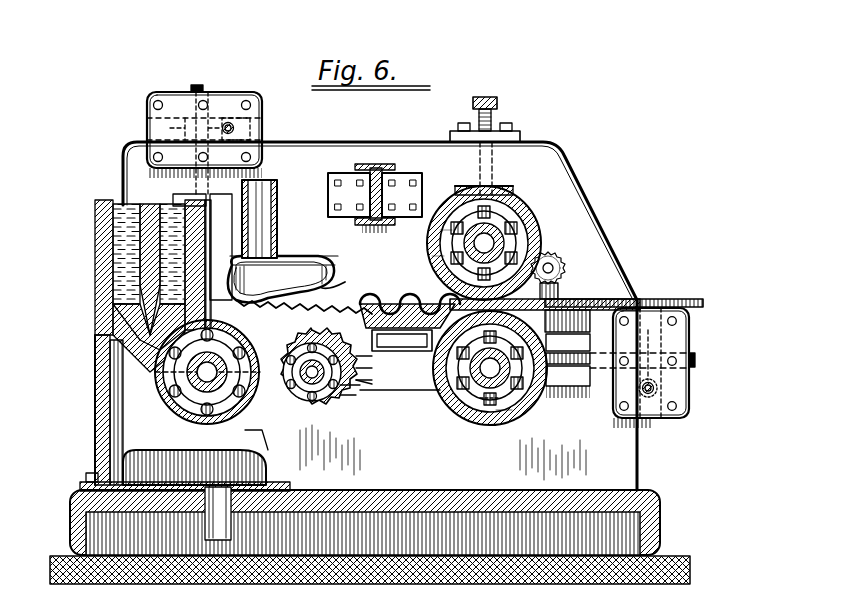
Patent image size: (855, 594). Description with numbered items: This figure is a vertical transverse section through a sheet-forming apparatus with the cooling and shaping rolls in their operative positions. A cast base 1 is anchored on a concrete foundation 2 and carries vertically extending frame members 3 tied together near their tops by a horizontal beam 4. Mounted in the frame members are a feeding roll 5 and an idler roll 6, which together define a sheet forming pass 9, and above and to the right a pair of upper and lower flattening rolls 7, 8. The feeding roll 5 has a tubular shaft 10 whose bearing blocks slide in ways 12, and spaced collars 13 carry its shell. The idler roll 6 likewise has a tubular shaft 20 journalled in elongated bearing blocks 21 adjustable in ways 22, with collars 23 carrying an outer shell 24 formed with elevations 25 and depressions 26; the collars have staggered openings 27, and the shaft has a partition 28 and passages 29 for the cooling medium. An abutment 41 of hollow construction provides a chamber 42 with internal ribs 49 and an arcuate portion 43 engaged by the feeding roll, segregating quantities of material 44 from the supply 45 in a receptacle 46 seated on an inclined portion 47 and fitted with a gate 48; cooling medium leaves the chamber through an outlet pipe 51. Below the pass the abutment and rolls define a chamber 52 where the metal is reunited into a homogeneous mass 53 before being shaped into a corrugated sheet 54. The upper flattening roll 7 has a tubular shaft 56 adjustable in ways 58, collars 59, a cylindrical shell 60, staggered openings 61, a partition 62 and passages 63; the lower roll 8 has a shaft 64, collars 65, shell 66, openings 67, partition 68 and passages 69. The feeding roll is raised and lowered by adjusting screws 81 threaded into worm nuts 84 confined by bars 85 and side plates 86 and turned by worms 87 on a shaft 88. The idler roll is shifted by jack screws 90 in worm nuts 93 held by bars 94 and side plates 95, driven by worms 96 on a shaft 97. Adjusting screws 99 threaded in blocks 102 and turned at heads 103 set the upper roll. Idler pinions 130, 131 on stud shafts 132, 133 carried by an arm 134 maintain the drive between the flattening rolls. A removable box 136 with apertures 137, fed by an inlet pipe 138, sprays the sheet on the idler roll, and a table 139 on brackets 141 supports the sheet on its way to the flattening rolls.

The base 1 is at (76, 510).
The concrete foundation 2 is at (60, 560).
The frame members 3 is at (136, 170).
The beam 4 is at (374, 165).
The feeding roll 5 is at (163, 375).
The idler roll 6 is at (280, 300).
The upper flattening roll 7 is at (522, 205).
The lower flattening roll 8 is at (528, 414).
The sheet forming pass 9 is at (207, 372).
The tubular shaft 10 is at (168, 376).
The ways 12 is at (176, 198).
The collars 13 is at (160, 365).
The tubular shaft 20 is at (372, 358).
The elongated bearing blocks 21 is at (420, 386).
The ways 22 is at (560, 398).
The collars 23 is at (326, 406).
The outer shell 24 is at (346, 412).
The elevations 25 is at (366, 394).
The depressions 26 is at (350, 405).
The staggered openings 27 is at (318, 420).
The partition 28 is at (370, 372).
The passages 29 is at (370, 384).
The abutment 41 is at (88, 429).
The chamber 42 is at (96, 485).
The arcuate portion 43 is at (180, 425).
The quantities of material 44 is at (182, 410).
The supply of material 45 is at (128, 228).
The receptacle 46 is at (103, 248).
The inclined portion 47 is at (98, 318).
The gate 48 is at (150, 268).
The internal ribs 49 is at (132, 455).
The outlet pipe 51 is at (220, 520).
The chamber 52 is at (256, 440).
The homogeneous mass 53 is at (300, 410).
The corrugated sheet 54 is at (348, 300).
The tubular shaft 56 is at (500, 242).
The ways 58 is at (462, 186).
The collars 59 is at (438, 258).
The outer cylindrical shell 60 is at (506, 186).
The staggered openings 61 is at (448, 240).
The partition 62 is at (515, 222).
The passages 63 is at (536, 246).
The tubular shaft 64 is at (488, 412).
The collars 65 is at (472, 408).
The cylindrical shell 66 is at (508, 412).
The staggered openings 67 is at (458, 398).
The partition 68 is at (480, 370).
The passages 69 is at (546, 376).
The adjusting screws 81 is at (197, 86).
The worm nuts 84 is at (200, 120).
The bars 85 is at (158, 105).
The side plates 86 is at (162, 138).
The worms 87 is at (240, 120).
The shaft 88 is at (234, 130).
The jack screws 90 is at (696, 360).
The worm nuts 93 is at (655, 300).
The bars 94 is at (664, 330).
The side plates 95 is at (672, 340).
The worms 96 is at (664, 386).
The shaft 97 is at (654, 392).
The adjusting screws 99 is at (492, 118).
The blocks 102 is at (520, 136).
The heads 103 is at (494, 102).
The upper idler pinion 130 is at (564, 262).
The lower idler pinion 131 is at (545, 315).
The stud shaft 132 is at (556, 268).
The stud shaft 133 is at (566, 288).
The arm 134 is at (568, 349).
The removable box 136 is at (325, 250).
The apertures 137 is at (338, 284).
The inlet pipe 138 is at (278, 236).
The table 139 is at (396, 298).
The brackets 141 is at (402, 340).